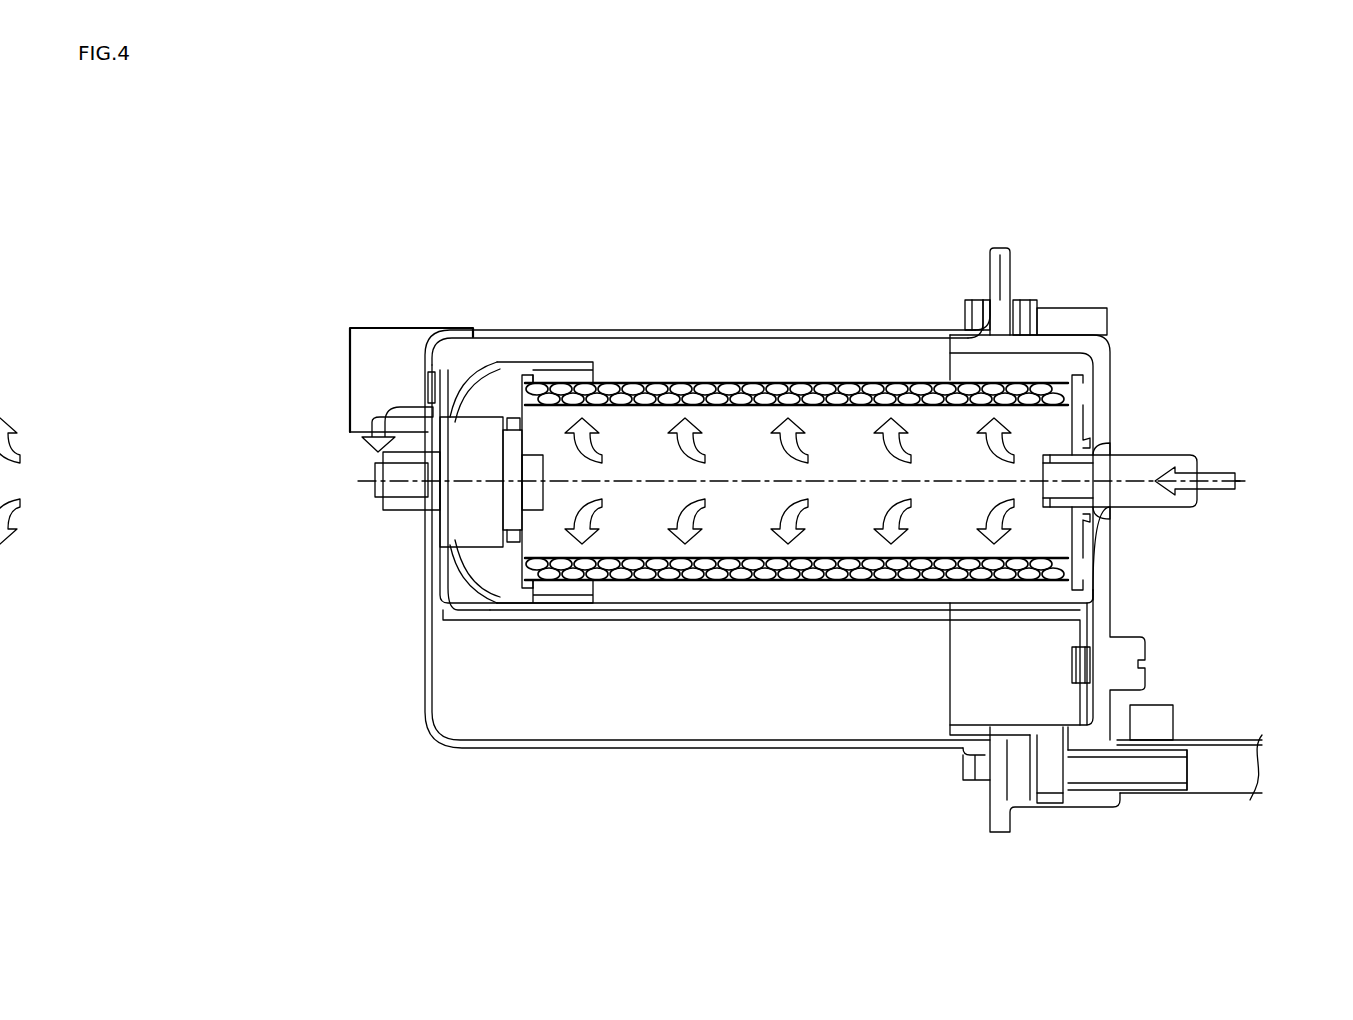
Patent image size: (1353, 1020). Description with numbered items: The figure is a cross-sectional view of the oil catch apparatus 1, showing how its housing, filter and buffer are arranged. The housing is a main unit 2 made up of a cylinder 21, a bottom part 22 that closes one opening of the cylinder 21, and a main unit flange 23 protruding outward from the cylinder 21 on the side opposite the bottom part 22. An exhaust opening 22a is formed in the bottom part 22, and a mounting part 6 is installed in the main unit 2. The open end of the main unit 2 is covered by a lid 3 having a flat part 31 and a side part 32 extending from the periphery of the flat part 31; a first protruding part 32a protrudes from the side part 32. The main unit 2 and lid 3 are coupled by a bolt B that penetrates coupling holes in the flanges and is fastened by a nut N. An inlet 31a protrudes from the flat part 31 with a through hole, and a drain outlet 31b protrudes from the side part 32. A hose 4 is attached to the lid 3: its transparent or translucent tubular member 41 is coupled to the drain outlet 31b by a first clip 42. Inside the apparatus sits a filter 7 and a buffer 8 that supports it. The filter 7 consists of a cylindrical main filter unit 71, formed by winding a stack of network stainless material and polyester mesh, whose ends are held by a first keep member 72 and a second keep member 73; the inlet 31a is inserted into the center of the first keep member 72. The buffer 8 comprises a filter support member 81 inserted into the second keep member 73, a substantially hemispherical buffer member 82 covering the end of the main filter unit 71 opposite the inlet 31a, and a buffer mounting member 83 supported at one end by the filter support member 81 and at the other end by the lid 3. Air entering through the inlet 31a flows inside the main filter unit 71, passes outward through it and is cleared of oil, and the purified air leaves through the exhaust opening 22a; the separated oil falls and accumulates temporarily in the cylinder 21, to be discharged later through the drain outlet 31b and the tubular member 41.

The oil catch apparatus 1 is at (1108, 213).
The main unit 2 is at (738, 331).
The cylinder 21 is at (655, 330).
The bottom part 22 is at (420, 633).
The exhaust opening 22a is at (430, 408).
The main unit flange 23 is at (980, 790).
The lid 3 is at (1112, 362).
The flat part 31 is at (1103, 540).
The inlet 31a is at (1190, 455).
The drain outlet 31b is at (1158, 788).
The side part 32 is at (1000, 272).
The first protruding part 32a is at (1088, 795).
The hose 4 is at (1222, 737).
The tubular member 41 is at (1227, 793).
The first clip 42 is at (1155, 715).
The mounting part 6 is at (390, 348).
The filter 7 is at (783, 379).
The main filter unit 71 is at (840, 385).
The first keep member 72 is at (1075, 418).
The second keep member 73 is at (522, 548).
The buffer 8 is at (520, 363).
The filter support member 81 is at (462, 510).
The buffer member 82 is at (563, 370).
The buffer mounting member 83 is at (745, 620).
The bolt B is at (970, 315).
The nut N is at (1025, 315).